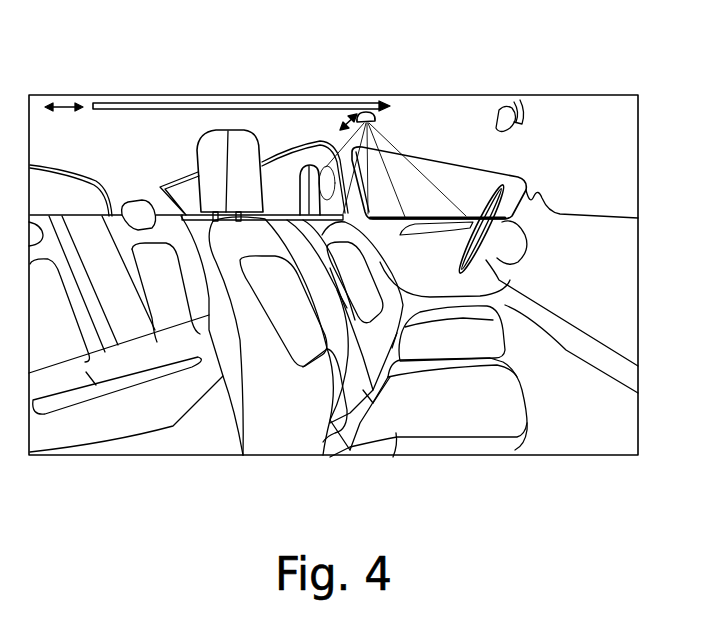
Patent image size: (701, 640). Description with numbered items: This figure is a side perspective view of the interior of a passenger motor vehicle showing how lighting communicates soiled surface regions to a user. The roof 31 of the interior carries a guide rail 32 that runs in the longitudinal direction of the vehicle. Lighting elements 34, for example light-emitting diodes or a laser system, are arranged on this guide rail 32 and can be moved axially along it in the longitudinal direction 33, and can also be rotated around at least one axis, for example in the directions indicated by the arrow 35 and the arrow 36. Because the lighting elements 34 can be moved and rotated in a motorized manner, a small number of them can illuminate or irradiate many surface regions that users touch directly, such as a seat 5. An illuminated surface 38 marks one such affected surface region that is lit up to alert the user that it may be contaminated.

The seat 5 is at (397, 452).
The roof 31 is at (232, 95).
The guide rail 32 is at (170, 103).
The longitudinal direction 33 is at (68, 101).
The lighting elements 34 is at (392, 104).
The arrow 35 is at (343, 126).
The arrow 36 is at (373, 113).
The illuminated surface 38 is at (454, 212).